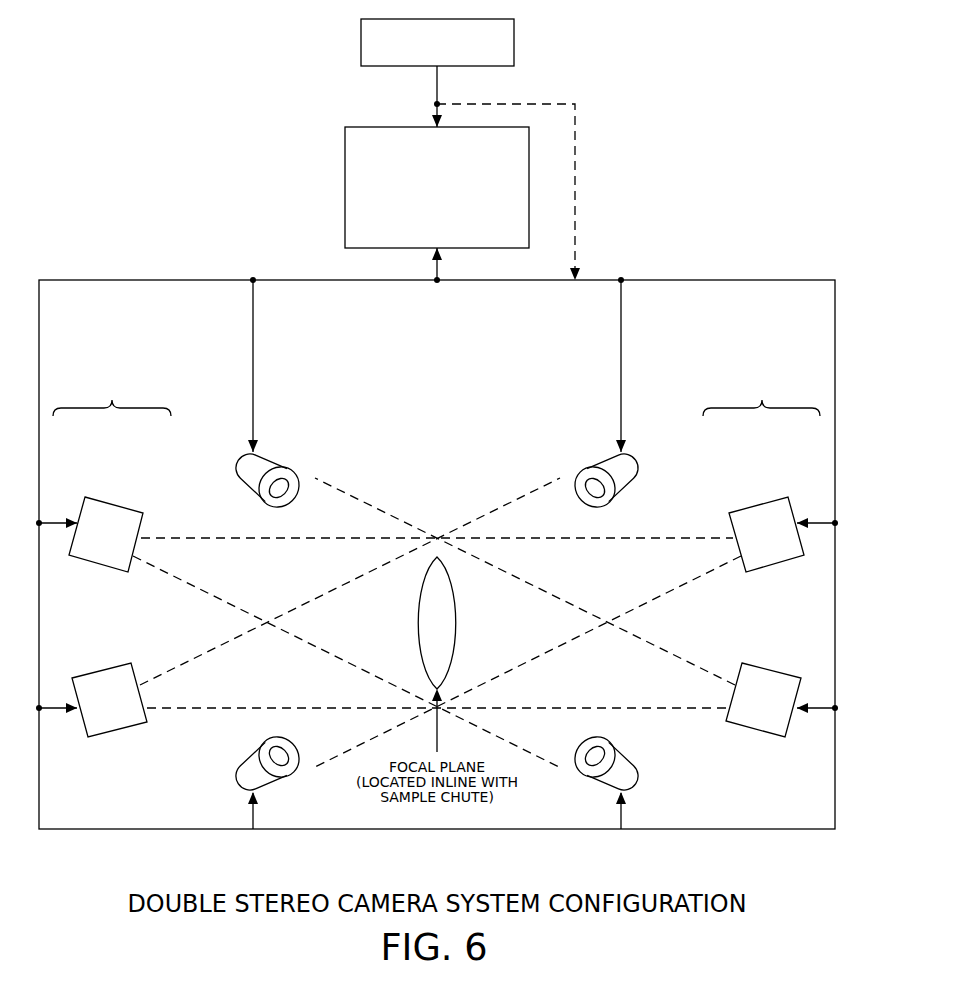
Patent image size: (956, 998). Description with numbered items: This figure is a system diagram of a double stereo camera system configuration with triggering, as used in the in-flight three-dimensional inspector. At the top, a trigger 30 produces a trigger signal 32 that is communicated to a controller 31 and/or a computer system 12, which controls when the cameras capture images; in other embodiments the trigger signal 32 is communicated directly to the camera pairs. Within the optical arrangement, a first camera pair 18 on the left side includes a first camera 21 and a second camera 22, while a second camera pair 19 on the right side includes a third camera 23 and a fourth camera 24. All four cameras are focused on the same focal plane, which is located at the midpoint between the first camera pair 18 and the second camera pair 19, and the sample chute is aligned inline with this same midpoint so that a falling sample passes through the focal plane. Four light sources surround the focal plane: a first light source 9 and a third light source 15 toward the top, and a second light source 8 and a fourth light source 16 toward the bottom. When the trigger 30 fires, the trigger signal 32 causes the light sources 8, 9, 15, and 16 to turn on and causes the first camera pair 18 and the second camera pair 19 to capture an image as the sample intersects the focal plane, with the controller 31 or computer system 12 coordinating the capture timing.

The trigger 30 is at (437, 42).
The trigger signal 32 is at (428, 84).
The controller 31 is at (437, 187).
The computer system 12 is at (437, 187).
The first camera pair 18 is at (112, 567).
The second camera pair 19 is at (761, 567).
The first camera 21 is at (118, 506).
The second camera 22 is at (115, 730).
The third camera 23 is at (757, 505).
The fourth camera 24 is at (753, 728).
The first light source 9 is at (283, 463).
The third light source 15 is at (591, 462).
The second light source 8 is at (283, 782).
The fourth light source 16 is at (591, 782).